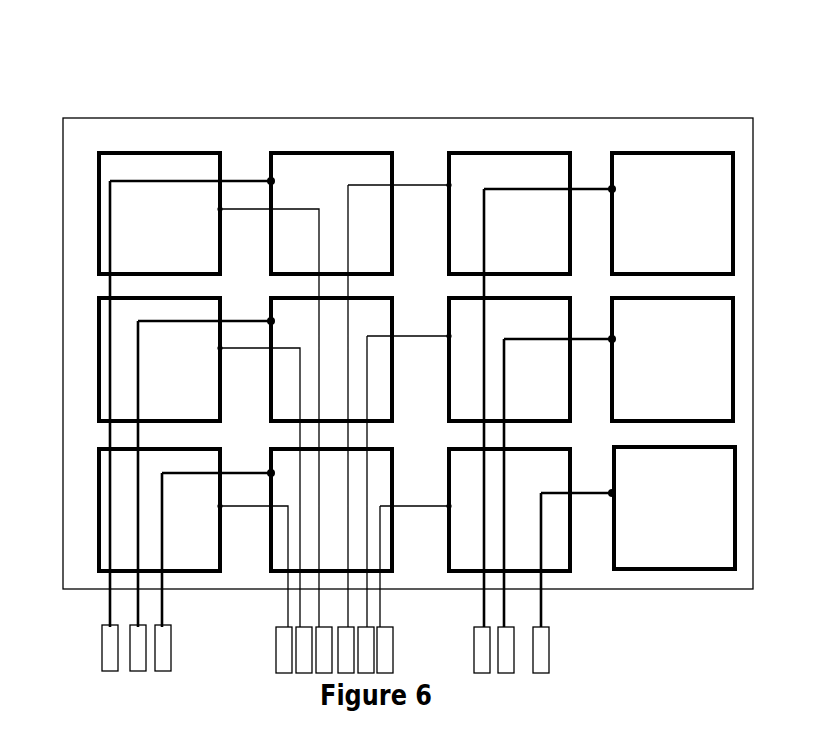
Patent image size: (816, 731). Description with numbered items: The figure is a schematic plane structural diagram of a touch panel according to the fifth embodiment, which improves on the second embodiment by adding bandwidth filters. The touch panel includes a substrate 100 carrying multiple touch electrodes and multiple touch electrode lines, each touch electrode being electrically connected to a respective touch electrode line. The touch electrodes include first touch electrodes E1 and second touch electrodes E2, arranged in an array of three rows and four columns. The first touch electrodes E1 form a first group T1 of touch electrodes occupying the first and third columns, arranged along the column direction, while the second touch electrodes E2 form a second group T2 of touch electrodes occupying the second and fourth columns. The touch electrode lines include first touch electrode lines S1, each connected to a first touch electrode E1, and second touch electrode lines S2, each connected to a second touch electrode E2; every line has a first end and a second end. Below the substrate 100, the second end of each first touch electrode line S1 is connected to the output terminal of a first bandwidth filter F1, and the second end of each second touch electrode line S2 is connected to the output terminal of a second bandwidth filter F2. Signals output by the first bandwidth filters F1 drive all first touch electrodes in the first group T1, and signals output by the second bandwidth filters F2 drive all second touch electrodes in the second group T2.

The substrate 100 is at (138, 118).
The first group of touch electrodes T1 is at (483, 173).
The second group of touch electrodes T2 is at (331, 177).
The first touch electrode E1 is at (334, 362).
The second touch electrode E2 is at (503, 362).
The first touch electrode line S1 is at (287, 605).
The second touch electrode line S2 is at (108, 604).
The first bandwidth filter F1 is at (334, 650).
The second bandwidth filter F2 is at (325, 649).